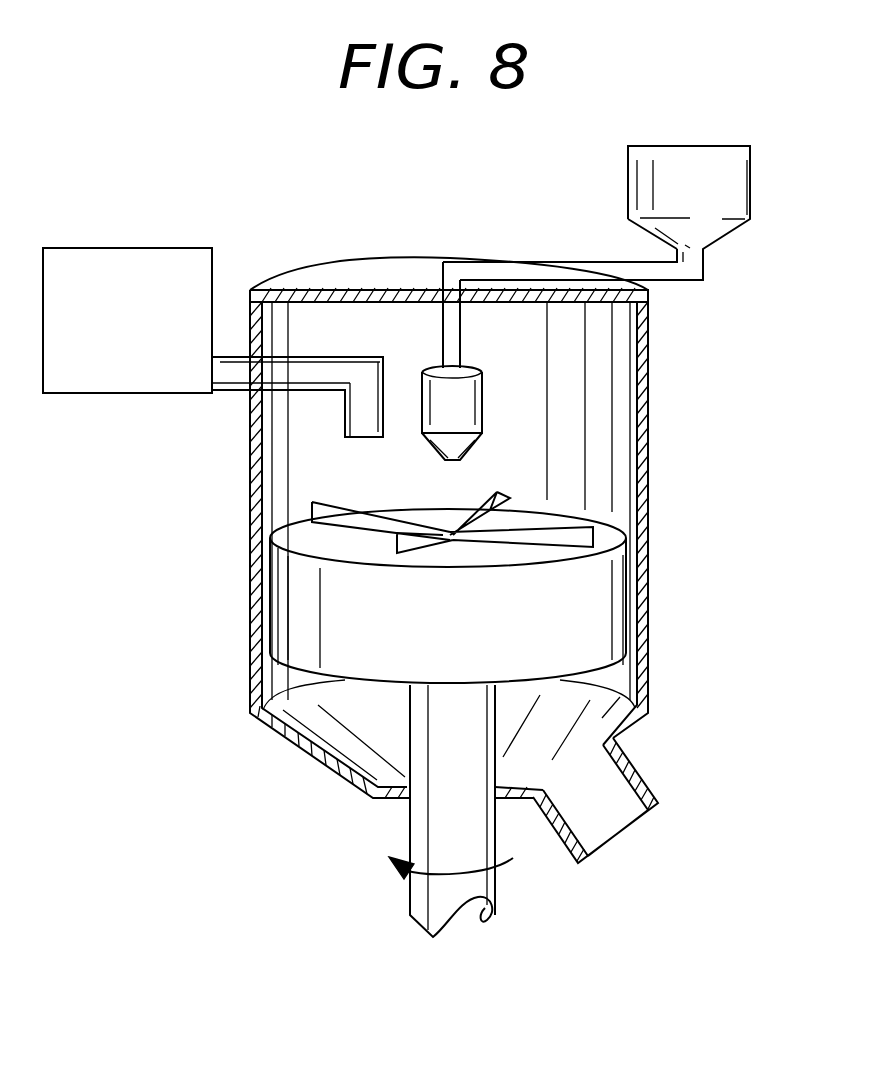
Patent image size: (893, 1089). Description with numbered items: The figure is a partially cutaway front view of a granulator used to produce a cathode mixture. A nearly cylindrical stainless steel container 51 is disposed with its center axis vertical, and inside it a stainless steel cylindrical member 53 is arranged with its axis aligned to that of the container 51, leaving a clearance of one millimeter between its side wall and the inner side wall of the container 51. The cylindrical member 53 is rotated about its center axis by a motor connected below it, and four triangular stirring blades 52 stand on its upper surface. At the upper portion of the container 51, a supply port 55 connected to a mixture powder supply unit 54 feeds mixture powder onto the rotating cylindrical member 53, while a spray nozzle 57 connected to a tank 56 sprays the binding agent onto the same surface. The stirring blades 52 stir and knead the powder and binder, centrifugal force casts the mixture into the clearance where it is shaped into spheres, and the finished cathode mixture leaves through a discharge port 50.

The discharge port 50 is at (618, 830).
The container 51 is at (648, 372).
The stirring blades 52 is at (495, 500).
The cylindrical member 53 is at (615, 613).
The mixture powder supply unit 54 is at (125, 256).
The supply port 55 is at (365, 437).
The tank 56 is at (628, 188).
The spray nozzle 57 is at (425, 400).